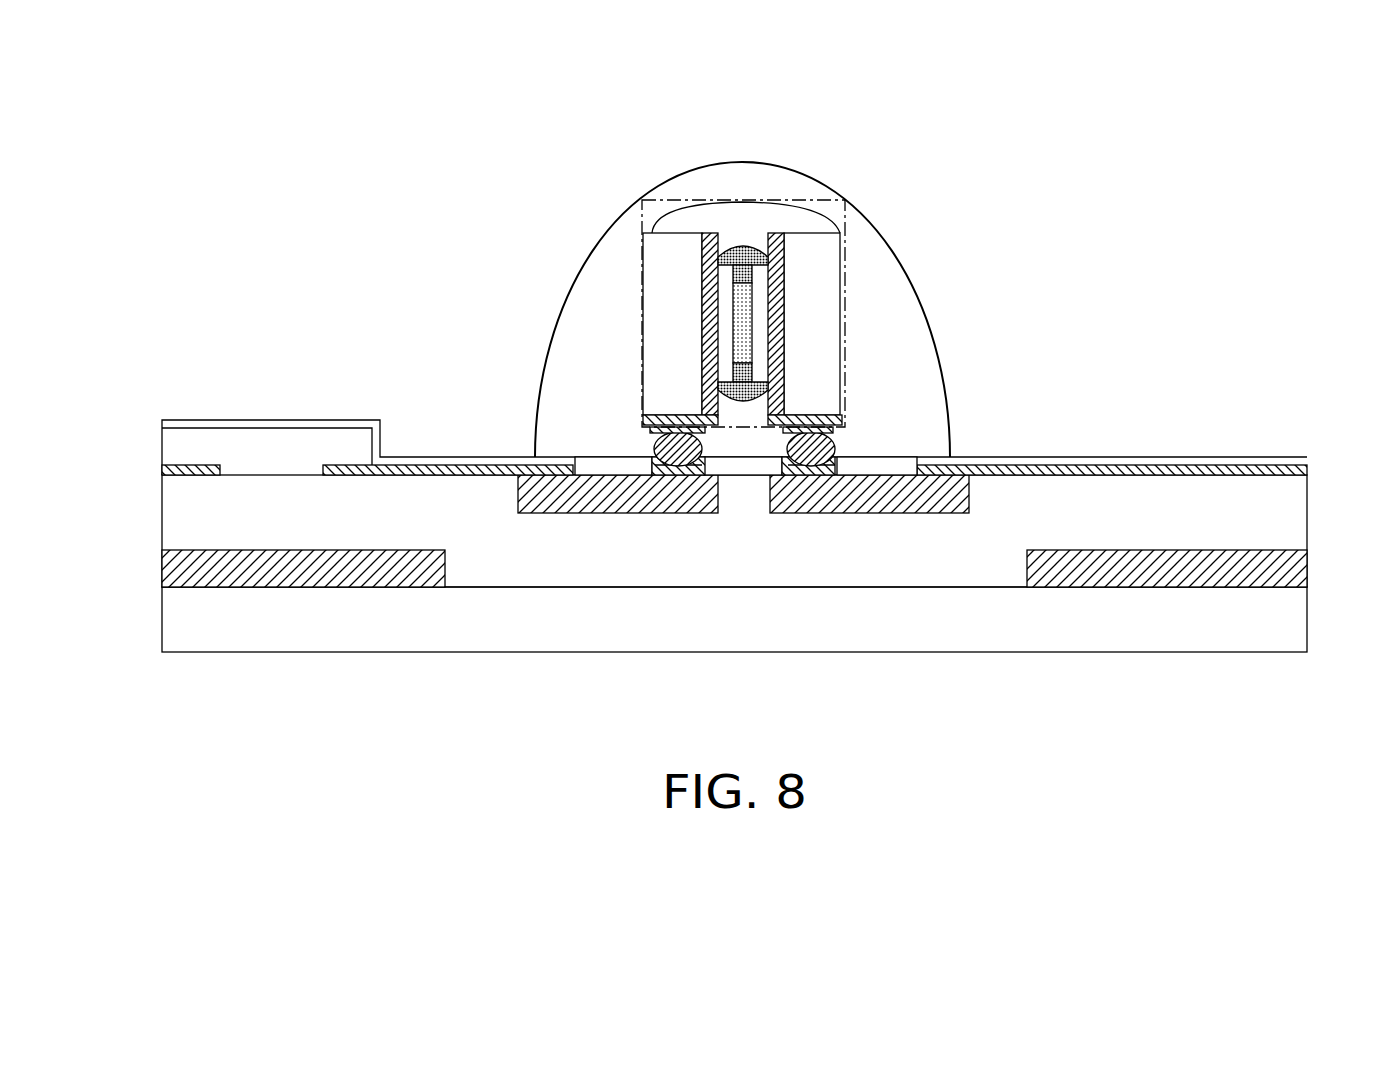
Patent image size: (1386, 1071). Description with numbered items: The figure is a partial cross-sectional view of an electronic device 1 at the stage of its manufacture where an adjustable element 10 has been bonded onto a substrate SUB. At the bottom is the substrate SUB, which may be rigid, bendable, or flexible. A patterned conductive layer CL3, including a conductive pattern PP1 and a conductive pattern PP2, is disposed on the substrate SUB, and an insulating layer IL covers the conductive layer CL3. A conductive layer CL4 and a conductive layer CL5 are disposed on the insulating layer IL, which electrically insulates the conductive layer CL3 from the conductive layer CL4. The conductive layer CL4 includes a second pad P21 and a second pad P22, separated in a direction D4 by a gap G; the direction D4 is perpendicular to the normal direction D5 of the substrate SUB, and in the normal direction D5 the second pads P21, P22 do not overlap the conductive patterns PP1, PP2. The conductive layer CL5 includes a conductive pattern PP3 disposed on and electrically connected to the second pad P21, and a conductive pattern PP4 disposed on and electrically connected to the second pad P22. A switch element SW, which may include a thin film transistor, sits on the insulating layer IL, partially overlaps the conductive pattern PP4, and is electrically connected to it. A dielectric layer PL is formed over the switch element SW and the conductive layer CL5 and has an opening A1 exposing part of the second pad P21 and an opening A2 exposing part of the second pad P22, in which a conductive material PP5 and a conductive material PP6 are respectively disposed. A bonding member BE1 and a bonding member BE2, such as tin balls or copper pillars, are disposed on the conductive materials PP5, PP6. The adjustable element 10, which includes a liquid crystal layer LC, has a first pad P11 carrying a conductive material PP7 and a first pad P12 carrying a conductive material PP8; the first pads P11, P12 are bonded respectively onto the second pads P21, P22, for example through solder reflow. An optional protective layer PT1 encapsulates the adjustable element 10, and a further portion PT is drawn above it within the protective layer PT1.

The electronic device 1 is at (1364, 752).
The adjustable element 10 is at (845, 272).
The substrate SUB is at (1297, 627).
The insulating layer IL is at (1293, 520).
The conductive pattern PP1 is at (1298, 570).
The conductive pattern PP2 is at (175, 568).
The conductive pattern PP3 is at (1082, 470).
The conductive pattern PP4 is at (403, 472).
The conductive material PP5 is at (803, 460).
The conductive material PP6 is at (687, 463).
The conductive material PP7 is at (835, 430).
The conductive material PP8 is at (640, 430).
The second pad P21 is at (920, 495).
The second pad P22 is at (573, 497).
The first pad P11 is at (847, 417).
The first pad P12 is at (647, 422).
The dielectric layer PL is at (168, 421).
The switch element SW is at (170, 443).
The gap G is at (735, 500).
The opening A2 is at (665, 465).
The opening A1 is at (827, 460).
The bonding member BE1 is at (840, 453).
The bonding member BE2 is at (655, 448).
The liquid crystal layer LC is at (738, 340).
The protective layer PT is at (733, 218).
The protective layer PT1 is at (588, 310).
The conductive layer CL3 is at (158, 103).
The conductive layer CL4 is at (158, 192).
The conductive layer CL5 is at (158, 282).
The direction D4 is at (1283, 177).
The normal direction D5 is at (1283, 177).